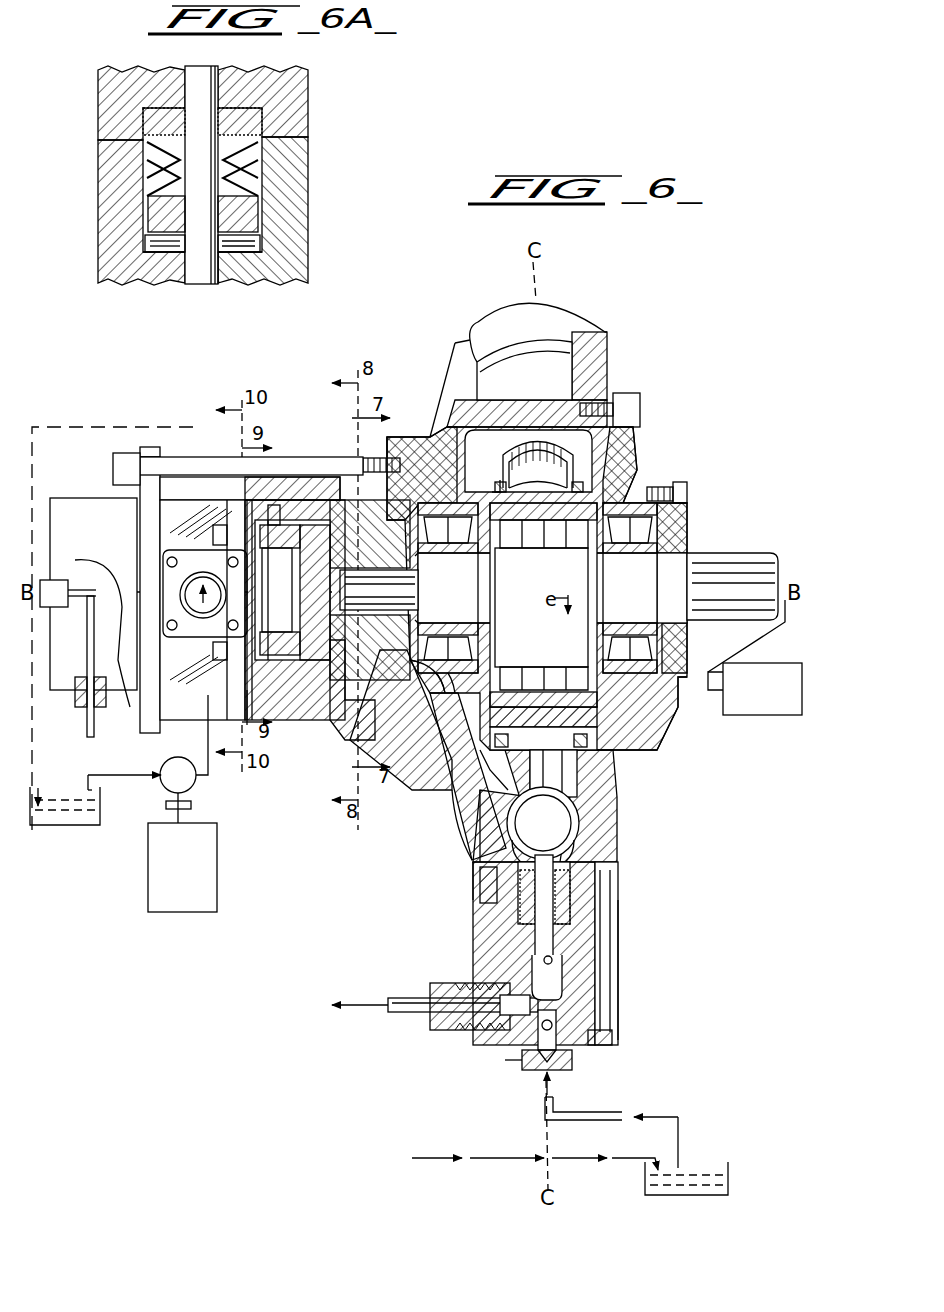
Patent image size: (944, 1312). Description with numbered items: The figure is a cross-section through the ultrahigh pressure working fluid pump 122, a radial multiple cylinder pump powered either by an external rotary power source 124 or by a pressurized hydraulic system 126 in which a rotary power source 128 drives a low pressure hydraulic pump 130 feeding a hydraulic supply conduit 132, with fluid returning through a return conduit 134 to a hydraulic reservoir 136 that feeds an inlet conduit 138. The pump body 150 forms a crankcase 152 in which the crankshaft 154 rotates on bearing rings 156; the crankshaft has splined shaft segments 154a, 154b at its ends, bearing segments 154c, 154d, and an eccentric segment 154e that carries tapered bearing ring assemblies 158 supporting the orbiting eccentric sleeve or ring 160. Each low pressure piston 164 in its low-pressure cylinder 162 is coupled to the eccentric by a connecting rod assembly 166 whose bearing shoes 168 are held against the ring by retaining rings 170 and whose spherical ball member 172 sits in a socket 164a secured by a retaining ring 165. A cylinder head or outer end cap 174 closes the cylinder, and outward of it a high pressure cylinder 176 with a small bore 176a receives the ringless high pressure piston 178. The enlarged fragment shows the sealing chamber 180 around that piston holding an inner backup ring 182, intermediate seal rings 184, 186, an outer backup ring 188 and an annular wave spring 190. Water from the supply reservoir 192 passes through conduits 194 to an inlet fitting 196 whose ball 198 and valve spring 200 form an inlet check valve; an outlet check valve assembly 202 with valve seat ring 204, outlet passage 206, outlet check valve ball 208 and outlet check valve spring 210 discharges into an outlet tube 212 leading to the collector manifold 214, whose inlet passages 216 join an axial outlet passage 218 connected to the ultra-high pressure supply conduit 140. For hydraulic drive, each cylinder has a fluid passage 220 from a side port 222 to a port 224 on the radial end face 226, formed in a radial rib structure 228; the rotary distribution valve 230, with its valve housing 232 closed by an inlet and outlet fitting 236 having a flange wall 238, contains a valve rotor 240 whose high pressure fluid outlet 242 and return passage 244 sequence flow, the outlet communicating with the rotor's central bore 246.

In FIG. 6, the ultrahigh pressure working fluid pump 122 is at (652, 925).
In FIG. 6, the external rotary power source 124 is at (785, 715).
In FIG. 6, the pressurized hydraulic system 126 is at (115, 848).
In FIG. 6, the rotary power source 128 is at (217, 830).
In FIG. 6, the hydraulic pump 130 is at (196, 785).
In FIG. 6, the hydraulic supply conduit 132 is at (208, 722).
In FIG. 6, the return conduit 134 is at (48, 738).
In FIG. 6, the hydraulic reservoir 136 is at (80, 826).
In FIG. 6, the inlet conduit 138 is at (90, 773).
In FIG. 6, the ultra-high pressure supply conduit 140 is at (42, 580).
In FIG. 6, the pump block or body 150 is at (440, 810).
In FIG. 6, the crankcase 152 is at (470, 768).
In FIG. 6, the crankshaft 154 is at (688, 550).
In FIG. 6, the splined shaft segment 154a is at (415, 592).
In FIG. 6, the splined shaft segment 154b is at (712, 556).
In FIG. 6, the bearing segment 154c is at (456, 588).
In FIG. 6, the bearing segment 154d is at (622, 588).
In FIG. 6, the eccentric segment 154e is at (543, 605).
In FIG. 6, the bearing rings 156 is at (442, 505).
In FIG. 6, the tapered bearing ring assemblies 158 is at (556, 520).
In FIG. 6, the eccentric sleeve or ring 160 is at (637, 712).
In FIG. 6, the low-pressure cylinder 162 is at (617, 805).
In FIG. 6, the low pressure piston 164 is at (528, 461).
In FIG. 6, the socket 164a is at (585, 845).
In FIG. 6, the retaining ring 165 is at (410, 850).
In FIG. 6, the connecting rod assemblies 166 is at (535, 470).
In FIG. 6, the bearing shoes 168 is at (532, 479).
In FIG. 6, the retaining rings 170 is at (486, 742).
In FIG. 6, the spherical ball member 172 is at (543, 823).
In FIG. 6A, the cylinder head or outer end cap 174 is at (283, 86).
In FIG. 6, the cylinder head or outer end cap 174 is at (590, 890).
In FIG. 6A, the high pressure cylinder 176 is at (290, 155).
In FIG. 6, the high pressure cylinder 176 is at (495, 357).
In FIG. 6A, the bore 176a is at (218, 265).
In FIG. 6, the bore 176a is at (580, 955).
In FIG. 6A, the high pressure piston 178 is at (212, 170).
In FIG. 6, the high pressure piston 178 is at (530, 940).
In FIG. 6A, the sealing chamber 180 is at (155, 238).
In FIG. 6, the sealing chamber 180 is at (525, 903).
In FIG. 6A, the inner backup ring 182 is at (143, 122).
In FIG. 6A, the intermediate seal ring 184 is at (150, 162).
In FIG. 6A, the intermediate seal ring 186 is at (150, 197).
In FIG. 6A, the outer backup ring 188 is at (155, 215).
In FIG. 6A, the annular wave spring 190 is at (158, 245).
In FIG. 6, the supply reservoir 192 is at (698, 1160).
In FIG. 6, the conduits 194 is at (575, 1112).
In FIG. 6, the inlet fitting 196 is at (515, 1085).
In FIG. 6, the ball 198 is at (565, 1020).
In FIG. 6, the valve spring 200 is at (570, 1005).
In FIG. 6, the outlet check valve assembly 202 is at (462, 1035).
In FIG. 6, the valve seat ring 204 is at (520, 1055).
In FIG. 6, the outlet passage 206 is at (520, 995).
In FIG. 6, the outlet check valve ball 208 is at (500, 985).
In FIG. 6, the outlet check valve spring 210 is at (510, 1030).
In FIG. 6, the outlet tube 212 is at (92, 710).
In FIG. 6, the collector manifold 214 is at (148, 594).
In FIG. 6, the inlet passages 216 is at (128, 708).
In FIG. 6, the axial outlet passage 218 is at (90, 590).
In FIG. 6, the fluid passage 220 is at (360, 742).
In FIG. 6, the side port 222 is at (490, 835).
In FIG. 6, the port 224 is at (345, 690).
In FIG. 6, the radial end face 226 is at (350, 535).
In FIG. 6, the radial rib structure 228 is at (446, 806).
In FIG. 6, the rotary distribution valve 230 is at (303, 455).
In FIG. 6, the valve housing 232 is at (248, 690).
In FIG. 6, the inlet and outlet fitting 236 is at (183, 518).
In FIG. 6, the flange wall 238 is at (232, 505).
In FIG. 6, the valve rotor 240 is at (306, 528).
In FIG. 6, the high pressure fluid outlet 242 is at (332, 655).
In FIG. 6, the return passage 244 is at (388, 570).
In FIG. 6, the central bore 246 is at (322, 570).